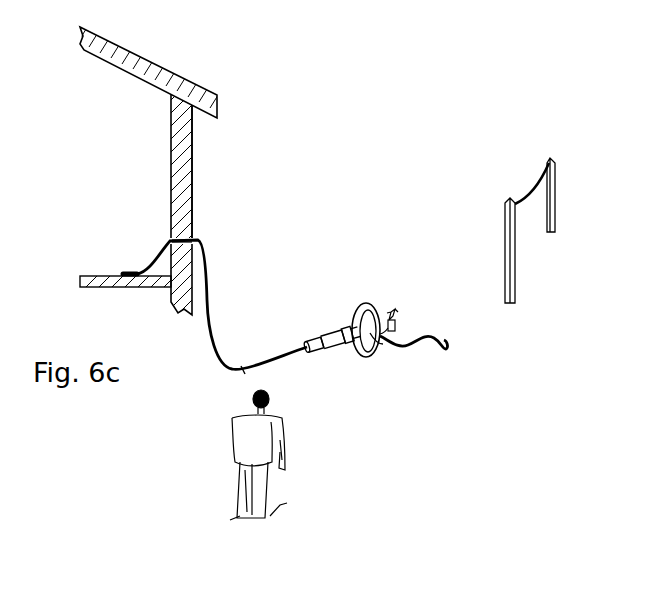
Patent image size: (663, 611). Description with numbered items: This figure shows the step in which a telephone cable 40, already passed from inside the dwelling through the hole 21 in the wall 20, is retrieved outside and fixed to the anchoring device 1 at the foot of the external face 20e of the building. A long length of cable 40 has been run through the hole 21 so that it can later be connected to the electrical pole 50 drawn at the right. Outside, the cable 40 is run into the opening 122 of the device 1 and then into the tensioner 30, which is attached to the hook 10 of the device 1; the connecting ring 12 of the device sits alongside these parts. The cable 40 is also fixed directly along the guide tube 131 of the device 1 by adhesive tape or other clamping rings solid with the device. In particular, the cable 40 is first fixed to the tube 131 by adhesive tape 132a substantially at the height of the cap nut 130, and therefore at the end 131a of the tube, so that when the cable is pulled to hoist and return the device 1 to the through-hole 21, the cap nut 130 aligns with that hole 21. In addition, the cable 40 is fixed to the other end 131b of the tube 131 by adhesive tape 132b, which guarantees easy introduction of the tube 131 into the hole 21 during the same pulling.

The anchoring device 1 is at (344, 316).
The hook 10 is at (394, 312).
The ring 12 is at (372, 309).
The wall 20 is at (188, 191).
The external face 20e is at (194, 142).
The hole 21 is at (196, 240).
The tensioner 30 is at (397, 318).
The telephone cable 40 is at (448, 349).
The electrical pole 50 is at (506, 201).
The opening 122 is at (373, 343).
The cap nut 130 is at (381, 314).
The guide tube 131 is at (327, 346).
The end of the tube 131a is at (353, 324).
The end of the tube 131b is at (303, 338).
The adhesive tape 132a is at (348, 357).
The adhesive tape 132b is at (320, 354).